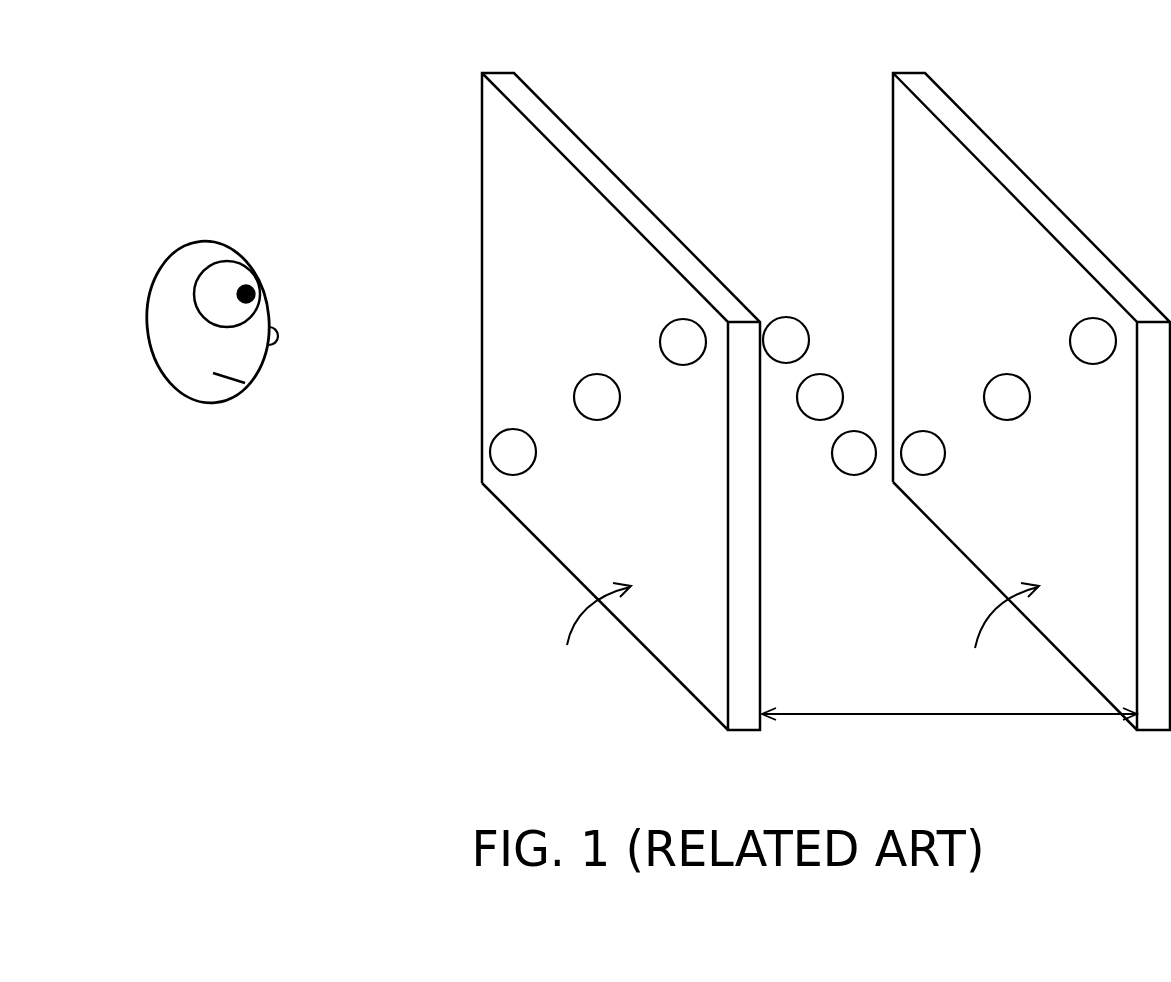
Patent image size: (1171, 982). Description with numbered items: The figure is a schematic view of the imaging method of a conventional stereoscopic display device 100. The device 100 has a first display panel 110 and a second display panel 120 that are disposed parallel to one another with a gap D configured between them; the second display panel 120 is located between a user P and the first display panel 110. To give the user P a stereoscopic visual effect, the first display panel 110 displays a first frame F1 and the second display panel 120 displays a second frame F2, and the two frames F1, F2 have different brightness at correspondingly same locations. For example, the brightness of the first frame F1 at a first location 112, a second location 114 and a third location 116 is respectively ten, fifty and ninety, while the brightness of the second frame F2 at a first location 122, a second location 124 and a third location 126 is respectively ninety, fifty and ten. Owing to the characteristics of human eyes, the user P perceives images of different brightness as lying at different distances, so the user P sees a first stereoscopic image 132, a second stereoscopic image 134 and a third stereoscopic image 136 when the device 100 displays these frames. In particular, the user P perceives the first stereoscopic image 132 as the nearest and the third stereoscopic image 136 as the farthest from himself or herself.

The stereoscopic display device 100 is at (925, 53).
The first display panel 110 is at (1033, 202).
The first location 112 is at (1088, 334).
The second location 114 is at (1002, 390).
The third location 116 is at (930, 453).
The second display panel 120 is at (623, 202).
The first location 122 is at (678, 334).
The second location 124 is at (595, 390).
The third location 126 is at (520, 452).
The first stereoscopic image 132 is at (780, 333).
The second stereoscopic image 134 is at (815, 390).
The third stereoscopic image 136 is at (848, 453).
The user P is at (157, 285).
The gap D is at (949, 732).
The first frame F1 is at (999, 637).
The second frame F2 is at (591, 637).